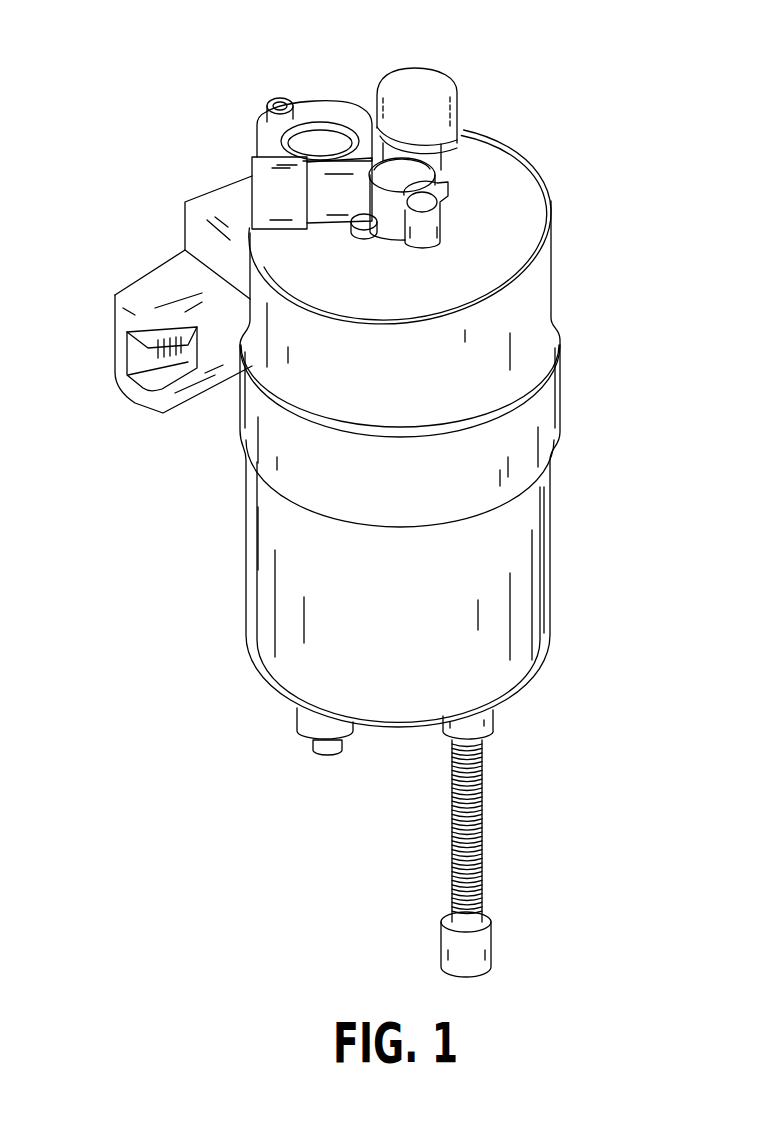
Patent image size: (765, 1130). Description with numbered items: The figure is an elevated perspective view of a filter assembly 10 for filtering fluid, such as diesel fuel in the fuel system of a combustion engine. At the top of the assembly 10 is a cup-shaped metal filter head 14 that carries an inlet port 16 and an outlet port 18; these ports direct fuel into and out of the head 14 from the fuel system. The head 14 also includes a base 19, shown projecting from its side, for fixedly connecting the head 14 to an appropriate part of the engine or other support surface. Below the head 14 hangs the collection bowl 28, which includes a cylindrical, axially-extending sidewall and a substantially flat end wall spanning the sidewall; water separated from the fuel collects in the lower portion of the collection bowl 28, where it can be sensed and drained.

The filter assembly 10 is at (163, 590).
The filter head 14 is at (513, 172).
The inlet port 16 is at (411, 76).
The outlet port 18 is at (195, 196).
The base 19 is at (114, 344).
The collection bowl 28 is at (553, 510).